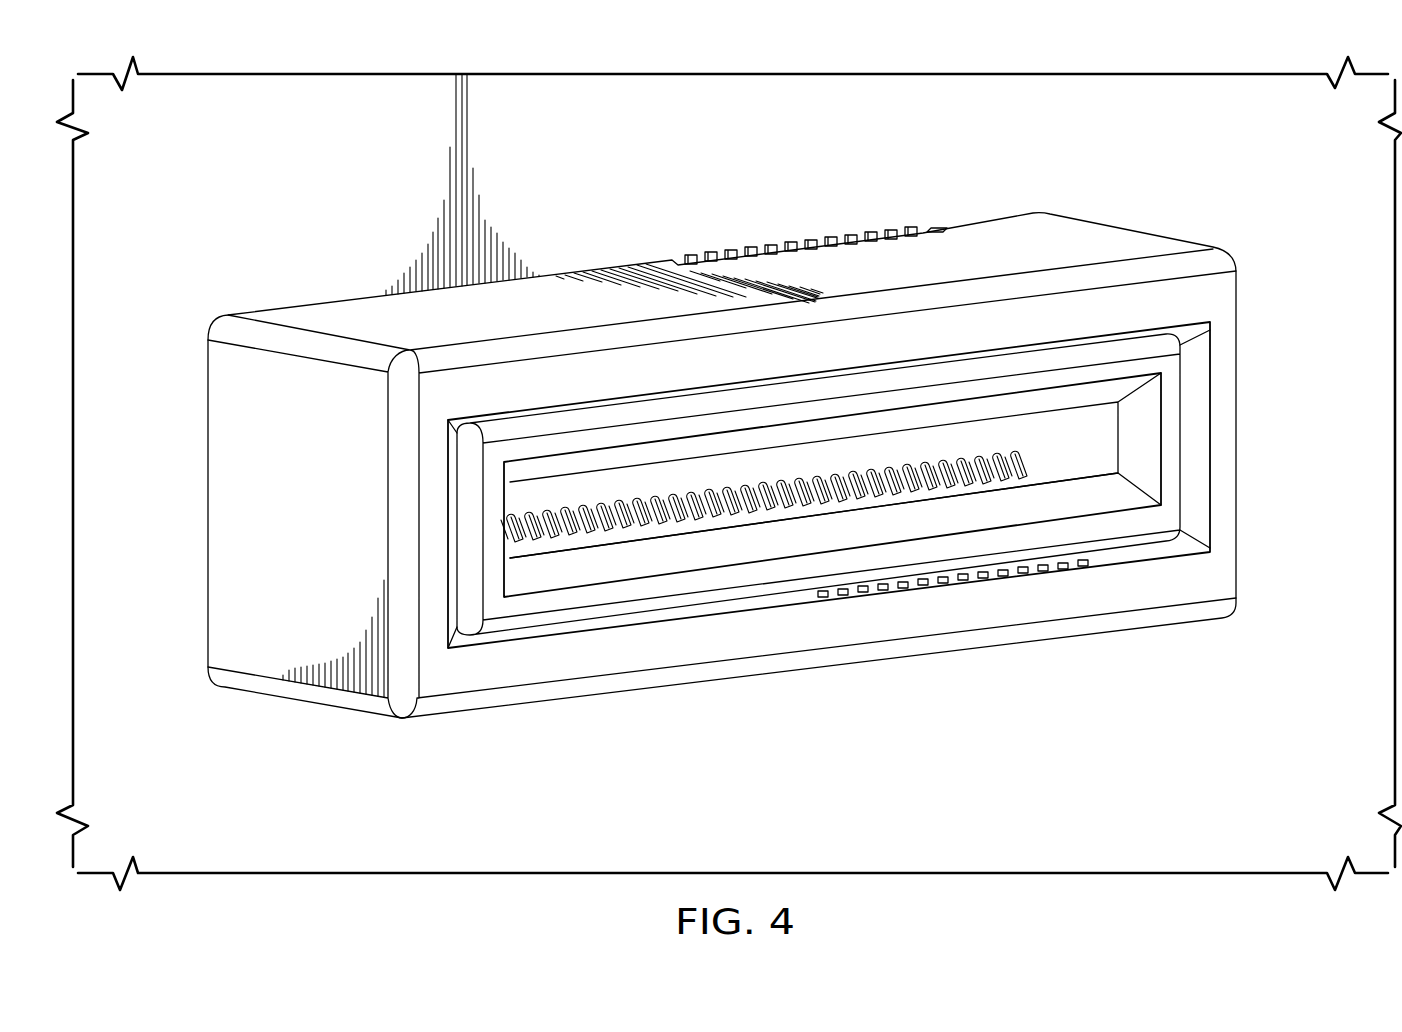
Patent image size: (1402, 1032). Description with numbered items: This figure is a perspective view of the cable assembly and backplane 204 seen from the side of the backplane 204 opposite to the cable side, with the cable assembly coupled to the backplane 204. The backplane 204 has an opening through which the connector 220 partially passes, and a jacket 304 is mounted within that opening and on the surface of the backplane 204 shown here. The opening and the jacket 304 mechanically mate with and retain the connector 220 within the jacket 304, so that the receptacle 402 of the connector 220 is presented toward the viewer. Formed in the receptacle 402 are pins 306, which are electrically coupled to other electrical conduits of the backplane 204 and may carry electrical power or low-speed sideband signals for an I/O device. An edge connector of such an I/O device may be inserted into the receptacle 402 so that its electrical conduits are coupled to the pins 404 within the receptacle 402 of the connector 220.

The backplane 204 is at (1093, 85).
The connector 220 is at (1038, 362).
The jacket 304 is at (1224, 303).
The pins 306 is at (1010, 572).
The receptacle 402 is at (762, 548).
The pins 404 is at (707, 520).